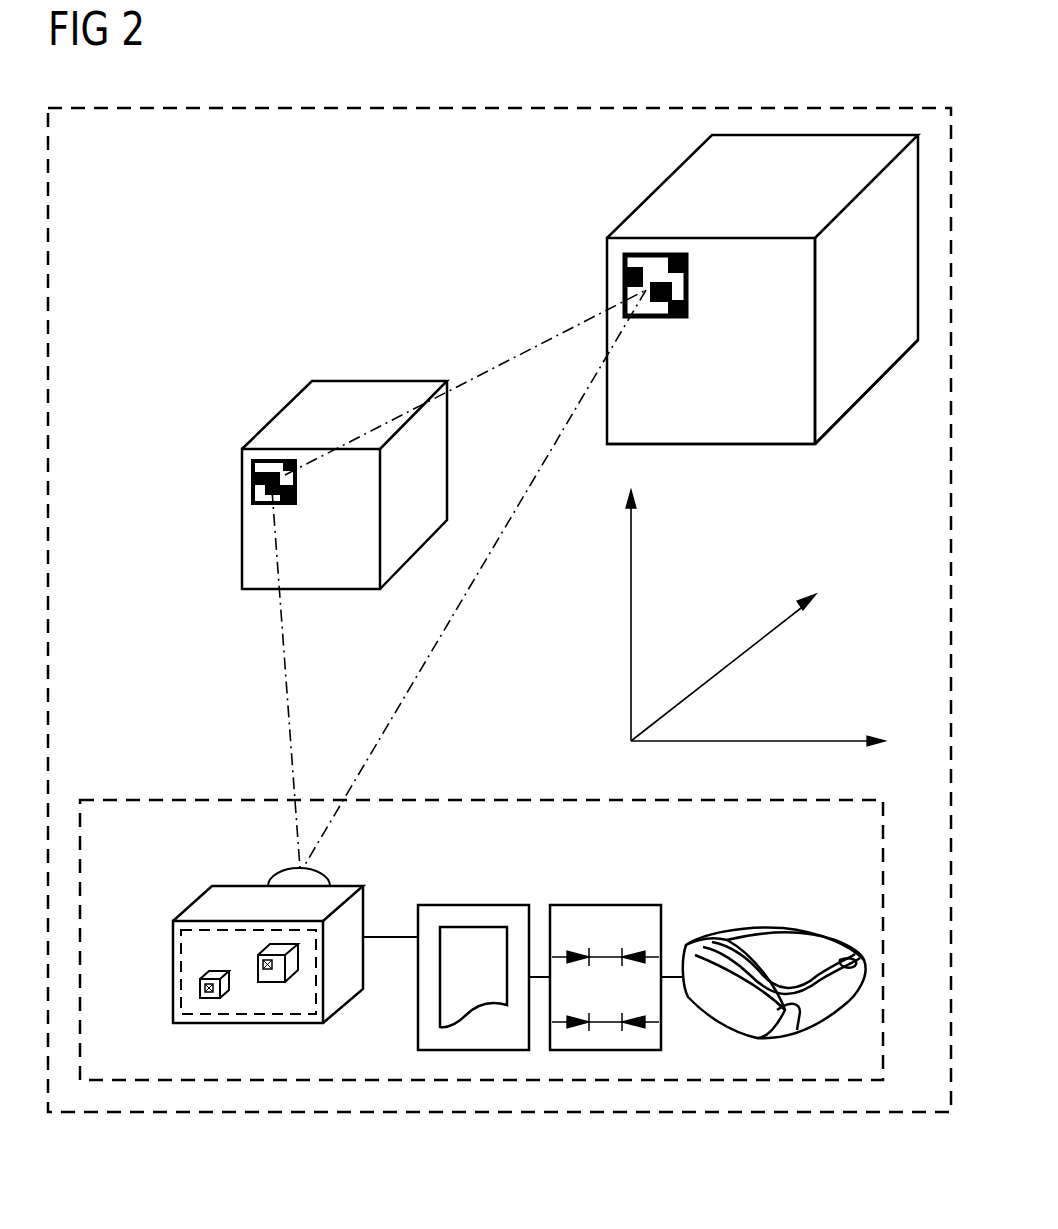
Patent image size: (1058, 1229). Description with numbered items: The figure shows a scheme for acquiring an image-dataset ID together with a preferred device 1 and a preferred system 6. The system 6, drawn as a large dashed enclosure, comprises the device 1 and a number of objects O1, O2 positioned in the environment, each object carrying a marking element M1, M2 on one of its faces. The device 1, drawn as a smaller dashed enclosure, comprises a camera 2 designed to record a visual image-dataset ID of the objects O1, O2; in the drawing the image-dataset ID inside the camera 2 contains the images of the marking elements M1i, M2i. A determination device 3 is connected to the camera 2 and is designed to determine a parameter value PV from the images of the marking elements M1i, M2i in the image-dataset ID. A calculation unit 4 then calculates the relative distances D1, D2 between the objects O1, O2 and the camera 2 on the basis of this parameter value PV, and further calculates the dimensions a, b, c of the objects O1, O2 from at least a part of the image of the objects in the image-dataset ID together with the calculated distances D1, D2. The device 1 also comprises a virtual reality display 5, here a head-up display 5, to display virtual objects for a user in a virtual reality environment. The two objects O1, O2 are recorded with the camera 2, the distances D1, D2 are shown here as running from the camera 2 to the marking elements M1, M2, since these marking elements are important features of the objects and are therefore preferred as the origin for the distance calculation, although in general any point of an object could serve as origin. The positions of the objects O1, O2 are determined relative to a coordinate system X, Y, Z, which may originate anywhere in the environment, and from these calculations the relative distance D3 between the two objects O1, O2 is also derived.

The device 1 is at (497, 800).
The camera 2 is at (210, 902).
The determination device 3 is at (478, 905).
The calculation unit 4 is at (611, 905).
The virtual reality display 5 is at (728, 933).
The system 6 is at (510, 107).
The object O1 is at (362, 392).
The object O2 is at (651, 212).
The marking element M1 is at (298, 483).
The marking element M2 is at (690, 290).
The image of marking element M1i is at (200, 985).
The image of marking element M2i is at (268, 962).
The distance D1 is at (283, 687).
The distance D2 is at (420, 675).
The relative distance D3 is at (510, 358).
The parameter value PV is at (440, 1010).
The image-dataset ID is at (268, 1040).
The dimension a is at (711, 427).
The dimension b is at (828, 341).
The dimension c is at (866, 392).
The coordinate system axis X is at (758, 761).
The coordinate system axis Y is at (619, 612).
The coordinate system axis Z is at (732, 667).